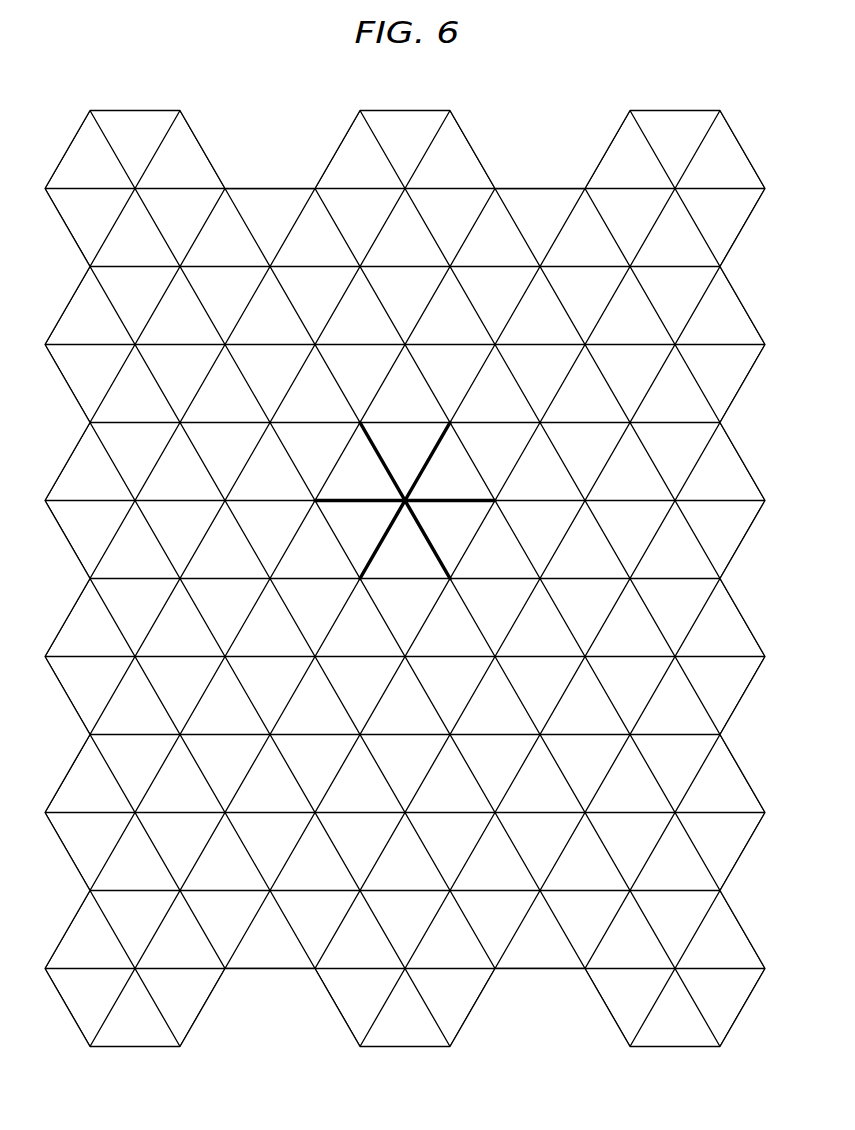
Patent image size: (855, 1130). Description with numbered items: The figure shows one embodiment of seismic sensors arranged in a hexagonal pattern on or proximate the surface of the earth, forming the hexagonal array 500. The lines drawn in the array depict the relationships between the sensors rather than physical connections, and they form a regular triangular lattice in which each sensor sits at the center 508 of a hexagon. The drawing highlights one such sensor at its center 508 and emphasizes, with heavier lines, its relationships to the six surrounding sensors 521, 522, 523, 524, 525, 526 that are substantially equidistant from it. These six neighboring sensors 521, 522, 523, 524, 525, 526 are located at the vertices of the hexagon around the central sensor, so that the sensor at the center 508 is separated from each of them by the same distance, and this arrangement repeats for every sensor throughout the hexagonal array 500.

The hexagonal array 500 is at (760, 142).
The center 508 is at (410, 497).
The first neighboring sensor 521 is at (453, 421).
The second neighboring sensor 522 is at (498, 497).
The third neighboring sensor 523 is at (457, 580).
The fourth neighboring sensor 524 is at (357, 580).
The fifth neighboring sensor 525 is at (312, 497).
The sixth neighboring sensor 526 is at (360, 420).